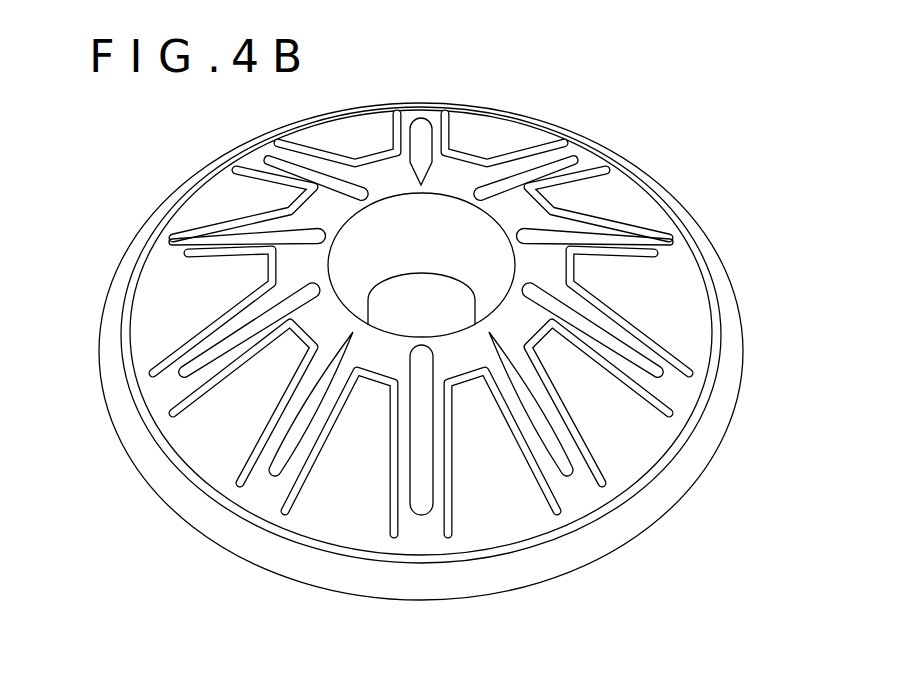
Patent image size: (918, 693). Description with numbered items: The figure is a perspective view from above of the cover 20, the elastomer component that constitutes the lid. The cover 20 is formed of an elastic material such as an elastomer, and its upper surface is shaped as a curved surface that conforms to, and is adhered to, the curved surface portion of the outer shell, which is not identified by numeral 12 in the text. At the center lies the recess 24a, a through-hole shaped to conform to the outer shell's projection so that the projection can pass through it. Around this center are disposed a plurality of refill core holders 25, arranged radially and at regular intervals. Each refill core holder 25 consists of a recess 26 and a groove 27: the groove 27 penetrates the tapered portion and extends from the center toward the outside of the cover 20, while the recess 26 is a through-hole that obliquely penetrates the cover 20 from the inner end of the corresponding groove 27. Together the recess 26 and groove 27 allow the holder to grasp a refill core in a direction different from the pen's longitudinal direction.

The frame 12 is at (720, 403).
The cover 20 is at (451, 333).
The recess 24a is at (513, 267).
The refill core holder 25 is at (461, 337).
The recess 26 is at (425, 346).
The groove 27 is at (432, 446).